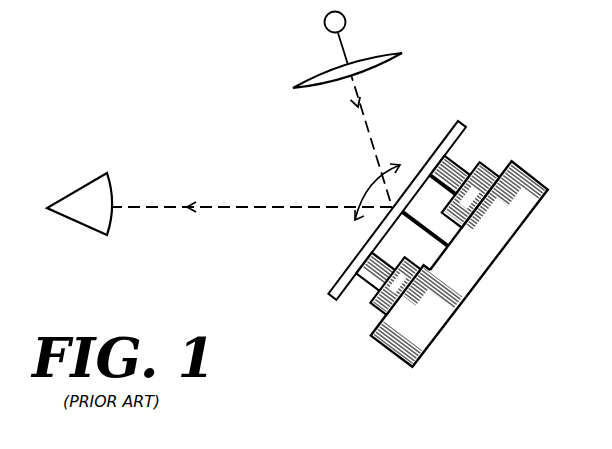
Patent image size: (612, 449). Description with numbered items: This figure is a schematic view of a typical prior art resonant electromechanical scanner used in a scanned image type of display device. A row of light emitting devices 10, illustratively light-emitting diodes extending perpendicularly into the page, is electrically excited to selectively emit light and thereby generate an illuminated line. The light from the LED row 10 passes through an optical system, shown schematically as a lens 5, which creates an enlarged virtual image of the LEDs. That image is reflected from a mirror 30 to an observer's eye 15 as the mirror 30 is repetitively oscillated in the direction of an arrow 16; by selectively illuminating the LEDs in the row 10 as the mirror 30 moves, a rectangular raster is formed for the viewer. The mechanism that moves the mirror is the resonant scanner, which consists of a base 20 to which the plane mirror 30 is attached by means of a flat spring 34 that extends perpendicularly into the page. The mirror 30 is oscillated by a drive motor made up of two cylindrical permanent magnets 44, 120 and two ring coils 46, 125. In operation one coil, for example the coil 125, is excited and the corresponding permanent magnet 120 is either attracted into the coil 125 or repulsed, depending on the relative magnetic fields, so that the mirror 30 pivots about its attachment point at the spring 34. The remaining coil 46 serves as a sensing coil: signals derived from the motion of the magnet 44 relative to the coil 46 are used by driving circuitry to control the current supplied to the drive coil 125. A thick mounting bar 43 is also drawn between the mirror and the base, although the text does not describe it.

The row of light emitting devices 10 is at (324, 23).
The lens 5 is at (375, 54).
The observer's eye 15 is at (78, 194).
The arrow 16 is at (367, 194).
The mirror 30 is at (452, 129).
The cylindrical permanent magnet 44 is at (460, 163).
The ring coil 46 is at (490, 169).
The mounting bar 43 is at (407, 211).
The base 20 is at (506, 248).
The flat spring 34 is at (420, 227).
The cylindrical permanent magnet 120 is at (360, 286).
The ring coil 125 is at (377, 306).